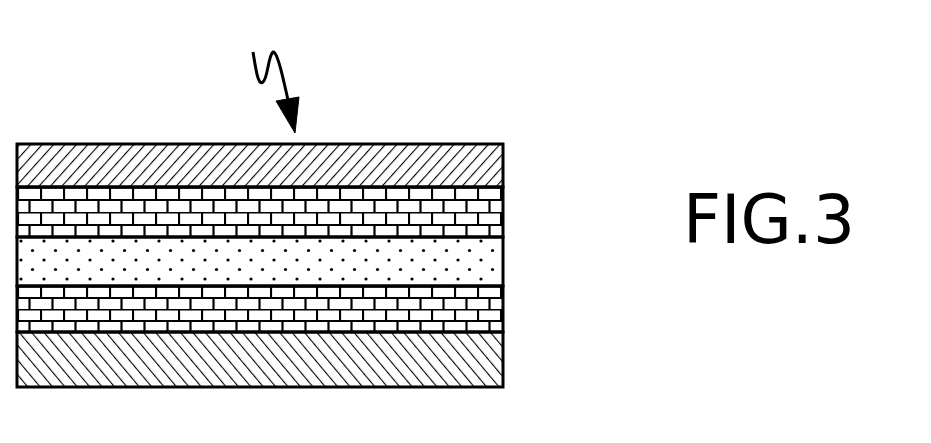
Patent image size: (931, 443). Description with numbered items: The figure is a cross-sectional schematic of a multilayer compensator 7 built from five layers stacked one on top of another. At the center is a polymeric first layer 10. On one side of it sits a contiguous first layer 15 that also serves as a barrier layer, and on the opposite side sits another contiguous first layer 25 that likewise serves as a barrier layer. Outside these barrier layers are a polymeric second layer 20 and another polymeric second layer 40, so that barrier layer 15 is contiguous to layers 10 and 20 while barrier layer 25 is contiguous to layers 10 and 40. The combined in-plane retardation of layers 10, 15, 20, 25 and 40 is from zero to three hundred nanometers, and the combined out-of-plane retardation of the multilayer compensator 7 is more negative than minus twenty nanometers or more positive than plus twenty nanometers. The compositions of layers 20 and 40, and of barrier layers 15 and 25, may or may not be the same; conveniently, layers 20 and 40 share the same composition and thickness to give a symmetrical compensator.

The multilayer compensator 7 is at (274, 72).
The polymeric second layer 20 is at (503, 152).
The contiguous first layer 15 is at (503, 207).
The polymeric first layer 10 is at (503, 258).
The contiguous first layer 25 is at (503, 313).
The polymeric second layer 40 is at (503, 370).